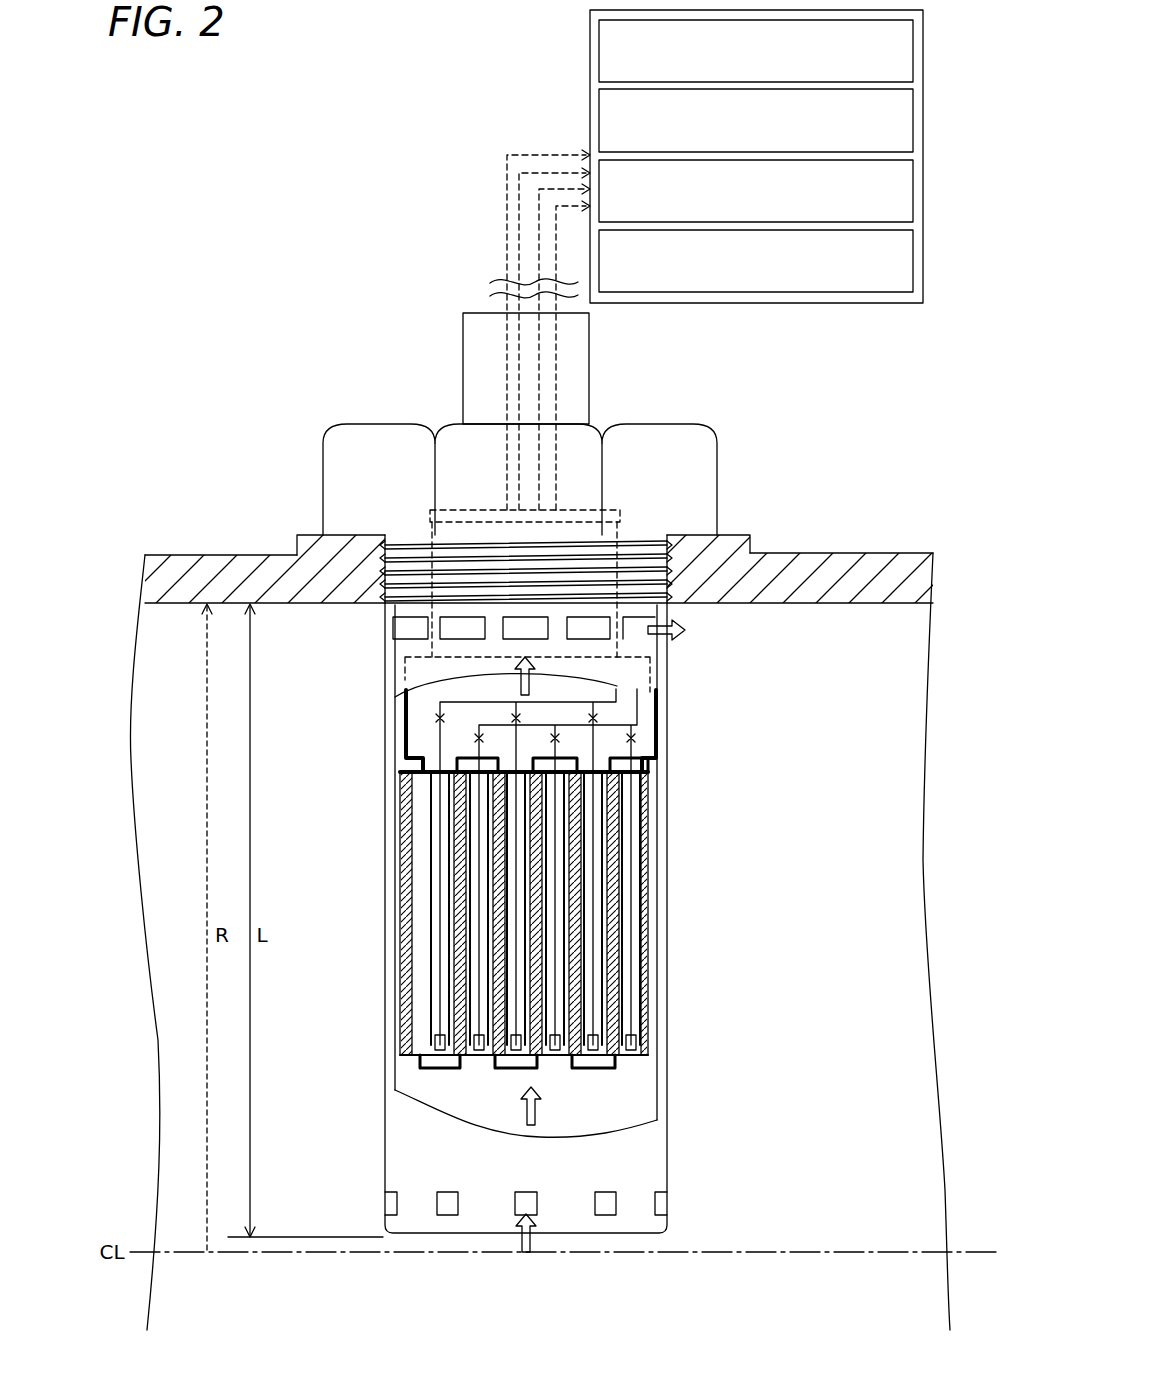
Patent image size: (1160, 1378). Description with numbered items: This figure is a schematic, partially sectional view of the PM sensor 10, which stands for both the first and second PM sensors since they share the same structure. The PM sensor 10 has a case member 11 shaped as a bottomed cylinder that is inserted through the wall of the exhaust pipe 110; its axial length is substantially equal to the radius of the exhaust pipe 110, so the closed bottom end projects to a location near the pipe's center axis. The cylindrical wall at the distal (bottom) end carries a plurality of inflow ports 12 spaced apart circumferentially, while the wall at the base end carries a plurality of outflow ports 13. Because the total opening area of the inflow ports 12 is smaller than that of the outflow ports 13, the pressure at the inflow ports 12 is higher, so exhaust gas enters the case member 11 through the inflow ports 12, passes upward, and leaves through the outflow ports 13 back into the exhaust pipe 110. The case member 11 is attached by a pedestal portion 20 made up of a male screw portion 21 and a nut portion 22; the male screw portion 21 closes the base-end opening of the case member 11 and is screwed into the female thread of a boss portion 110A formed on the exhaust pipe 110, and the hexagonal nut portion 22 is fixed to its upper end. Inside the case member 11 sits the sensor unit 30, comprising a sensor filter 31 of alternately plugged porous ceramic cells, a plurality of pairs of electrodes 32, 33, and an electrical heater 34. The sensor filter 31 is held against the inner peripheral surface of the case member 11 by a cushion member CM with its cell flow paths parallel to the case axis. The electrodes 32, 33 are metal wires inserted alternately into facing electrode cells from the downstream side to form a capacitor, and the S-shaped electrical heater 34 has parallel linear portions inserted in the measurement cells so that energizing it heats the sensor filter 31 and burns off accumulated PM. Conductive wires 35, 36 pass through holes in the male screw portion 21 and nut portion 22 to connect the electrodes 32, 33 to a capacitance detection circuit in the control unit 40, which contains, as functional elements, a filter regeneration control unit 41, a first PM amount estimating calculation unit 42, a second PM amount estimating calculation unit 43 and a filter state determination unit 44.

The PM sensor 10 is at (392, 350).
The case member 11 is at (650, 1160).
The inflow ports 12 is at (447, 1205).
The outflow ports 13 is at (400, 636).
The pedestal portion 20 is at (952, 418).
The male screw portion 21 is at (675, 535).
The nut portion 22 is at (705, 500).
The sensor unit 30 is at (663, 886).
The sensor filter 31 is at (652, 918).
The electrode 32 is at (652, 966).
The electrode 33 is at (652, 1012).
The electrical heater 34 is at (655, 1090).
The conductive wire 35 is at (660, 690).
The conductive wire 36 is at (660, 722).
The cushion member CM is at (658, 825).
The control unit 40 is at (590, 47).
The filter regeneration control unit 41 is at (923, 48).
The first PM amount estimating calculation unit 42 is at (923, 118).
The second PM amount estimating calculation unit 43 is at (923, 190).
The filter state determination unit 44 is at (923, 262).
The exhaust pipe 110 is at (539, 528).
The boss portion 110A is at (313, 548).